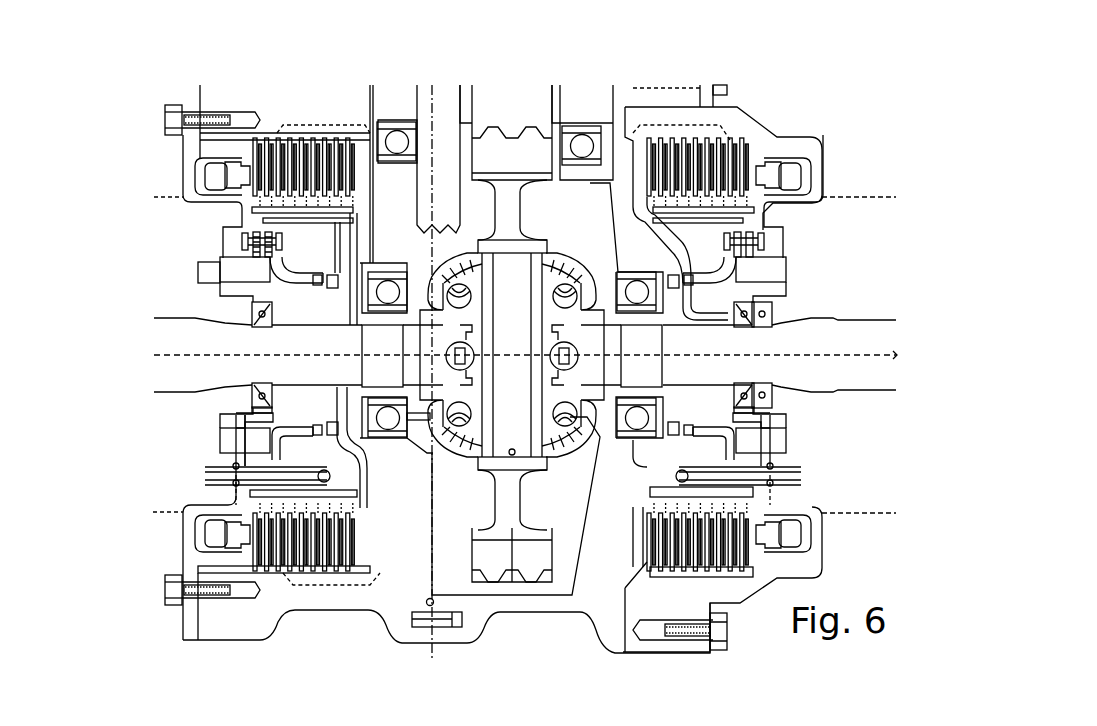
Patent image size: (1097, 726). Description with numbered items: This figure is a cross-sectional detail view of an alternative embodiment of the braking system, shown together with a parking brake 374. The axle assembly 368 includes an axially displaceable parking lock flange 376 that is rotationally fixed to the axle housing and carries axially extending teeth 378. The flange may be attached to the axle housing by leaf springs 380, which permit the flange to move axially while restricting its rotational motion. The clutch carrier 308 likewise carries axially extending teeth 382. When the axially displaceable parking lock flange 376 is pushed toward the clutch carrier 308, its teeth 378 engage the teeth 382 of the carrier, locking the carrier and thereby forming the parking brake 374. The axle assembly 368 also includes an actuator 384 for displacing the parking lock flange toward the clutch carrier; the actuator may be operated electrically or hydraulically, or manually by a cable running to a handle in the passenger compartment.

The clutch carrier 308 is at (358, 223).
The axle assembly 368 is at (843, 153).
The parking brake 374 is at (302, 306).
The axially displaceable parking lock flange 376 is at (275, 232).
The axially extending teeth 378 is at (318, 282).
The leaf springs 380 is at (262, 231).
The axially extending teeth 382 is at (333, 278).
The actuator 384 is at (207, 278).